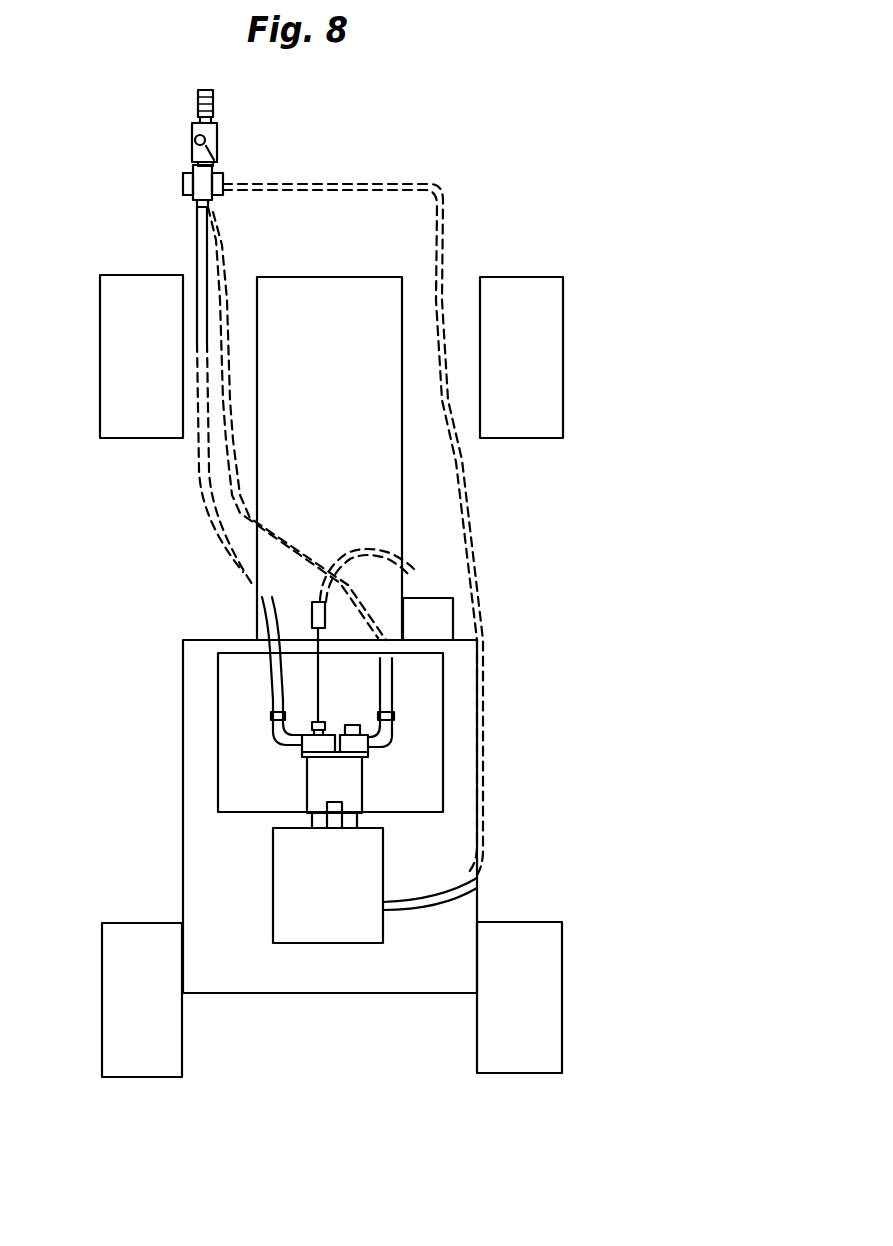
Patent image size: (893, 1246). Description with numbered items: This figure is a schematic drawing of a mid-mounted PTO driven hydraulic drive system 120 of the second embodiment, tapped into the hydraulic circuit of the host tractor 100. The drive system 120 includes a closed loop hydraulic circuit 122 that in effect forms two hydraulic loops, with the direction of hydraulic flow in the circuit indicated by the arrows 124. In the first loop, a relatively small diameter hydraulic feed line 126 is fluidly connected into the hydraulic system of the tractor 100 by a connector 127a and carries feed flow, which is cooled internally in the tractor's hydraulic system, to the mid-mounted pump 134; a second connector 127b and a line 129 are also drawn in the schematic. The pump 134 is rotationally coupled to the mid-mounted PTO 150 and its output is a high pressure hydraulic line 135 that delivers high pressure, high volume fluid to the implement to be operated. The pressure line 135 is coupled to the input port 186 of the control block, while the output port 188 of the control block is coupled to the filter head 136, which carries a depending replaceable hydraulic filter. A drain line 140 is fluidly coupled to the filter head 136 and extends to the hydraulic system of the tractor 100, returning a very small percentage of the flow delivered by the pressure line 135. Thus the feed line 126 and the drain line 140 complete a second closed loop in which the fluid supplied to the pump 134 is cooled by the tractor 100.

The tractor 100 is at (263, 993).
The full power drive system 120 is at (274, 697).
The closed loop hydraulic circuit 122 is at (395, 683).
The arrows 124 is at (197, 537).
The hydraulic feed line 126 is at (421, 577).
The connector 127a is at (438, 600).
The second connector 127b is at (312, 724).
The pressure line 129 is at (312, 618).
The pump 134 is at (307, 783).
The high pressure hydraulic line 135 is at (222, 308).
The filter head 136 is at (183, 185).
The drain line 140 is at (445, 205).
The mid-mounted PTO 150 is at (283, 813).
The input port 186 is at (281, 128).
The output port 188 is at (218, 155).